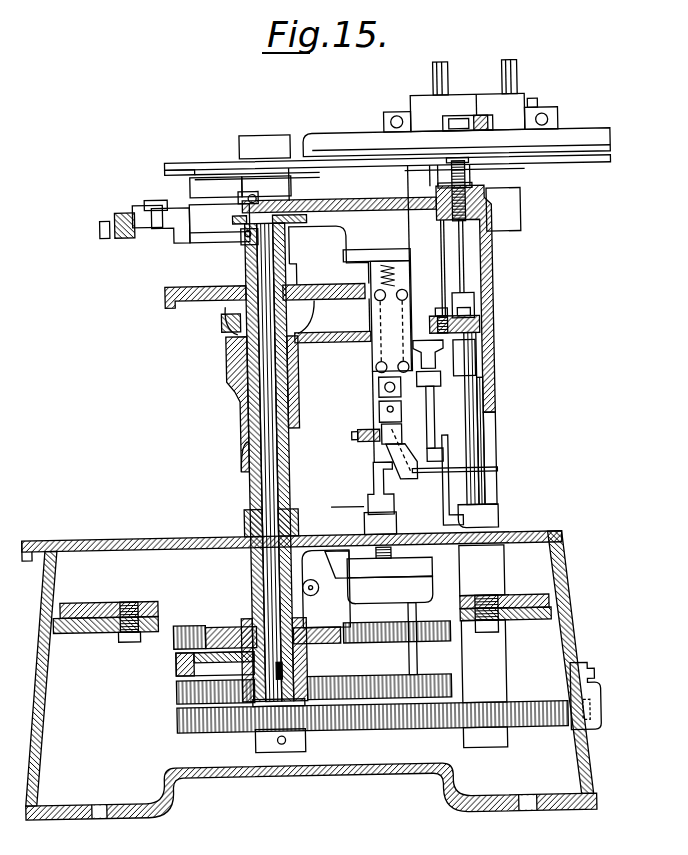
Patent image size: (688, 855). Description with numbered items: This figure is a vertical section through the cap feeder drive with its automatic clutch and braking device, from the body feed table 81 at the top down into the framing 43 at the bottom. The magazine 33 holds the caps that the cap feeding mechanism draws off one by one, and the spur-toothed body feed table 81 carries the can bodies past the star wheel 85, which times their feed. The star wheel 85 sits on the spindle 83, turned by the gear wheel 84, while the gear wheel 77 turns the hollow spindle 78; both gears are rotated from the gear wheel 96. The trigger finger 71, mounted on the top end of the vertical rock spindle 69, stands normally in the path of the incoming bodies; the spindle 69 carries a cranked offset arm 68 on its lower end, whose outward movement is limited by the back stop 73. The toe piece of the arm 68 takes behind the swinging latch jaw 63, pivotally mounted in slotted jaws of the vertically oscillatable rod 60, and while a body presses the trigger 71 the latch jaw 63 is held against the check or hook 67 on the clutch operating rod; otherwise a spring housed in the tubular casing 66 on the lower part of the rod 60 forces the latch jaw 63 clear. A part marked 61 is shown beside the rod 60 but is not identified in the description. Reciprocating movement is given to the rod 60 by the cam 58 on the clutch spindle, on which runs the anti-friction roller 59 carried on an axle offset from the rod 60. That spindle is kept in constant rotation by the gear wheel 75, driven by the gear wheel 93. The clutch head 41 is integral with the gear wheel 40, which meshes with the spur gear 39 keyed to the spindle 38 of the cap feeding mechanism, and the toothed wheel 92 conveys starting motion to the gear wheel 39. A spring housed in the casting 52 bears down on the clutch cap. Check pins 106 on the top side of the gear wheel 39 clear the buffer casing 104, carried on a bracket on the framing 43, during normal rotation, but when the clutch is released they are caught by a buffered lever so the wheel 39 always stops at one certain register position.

The magazine 33 is at (525, 71).
The trigger finger 71 is at (508, 170).
The star wheel 85 is at (300, 218).
The spindle 38 is at (491, 389).
The spindle 83 is at (268, 434).
The hollow spindle 78 is at (278, 484).
The body feed table 81 is at (218, 293).
The slide 61 is at (374, 315).
The vertical rock spindle 69 is at (437, 367).
The cranked offset arm 68 is at (436, 428).
The back stop 73 is at (449, 453).
The swinging latch jaw 63 is at (497, 472).
The anti-friction roller 59 is at (379, 388).
The cam 58 is at (379, 409).
The vertically oscillatable rod 60 is at (388, 413).
The tubular casing 66 is at (362, 441).
The framing 43 is at (407, 499).
The check or hook 67 is at (372, 478).
The casting 52 is at (380, 523).
The casing 104 is at (323, 511).
The spur gear 39 is at (428, 722).
The gear wheel 96 is at (186, 623).
The gear wheel 77 is at (214, 628).
The gear wheel 84 is at (172, 662).
The gear wheel 93 is at (172, 691).
The toothed wheel 92 is at (172, 718).
The gear wheel 40 is at (416, 625).
The gear wheel 75 is at (448, 687).
The clutch head 41 is at (390, 580).
The check pins 106 is at (321, 597).